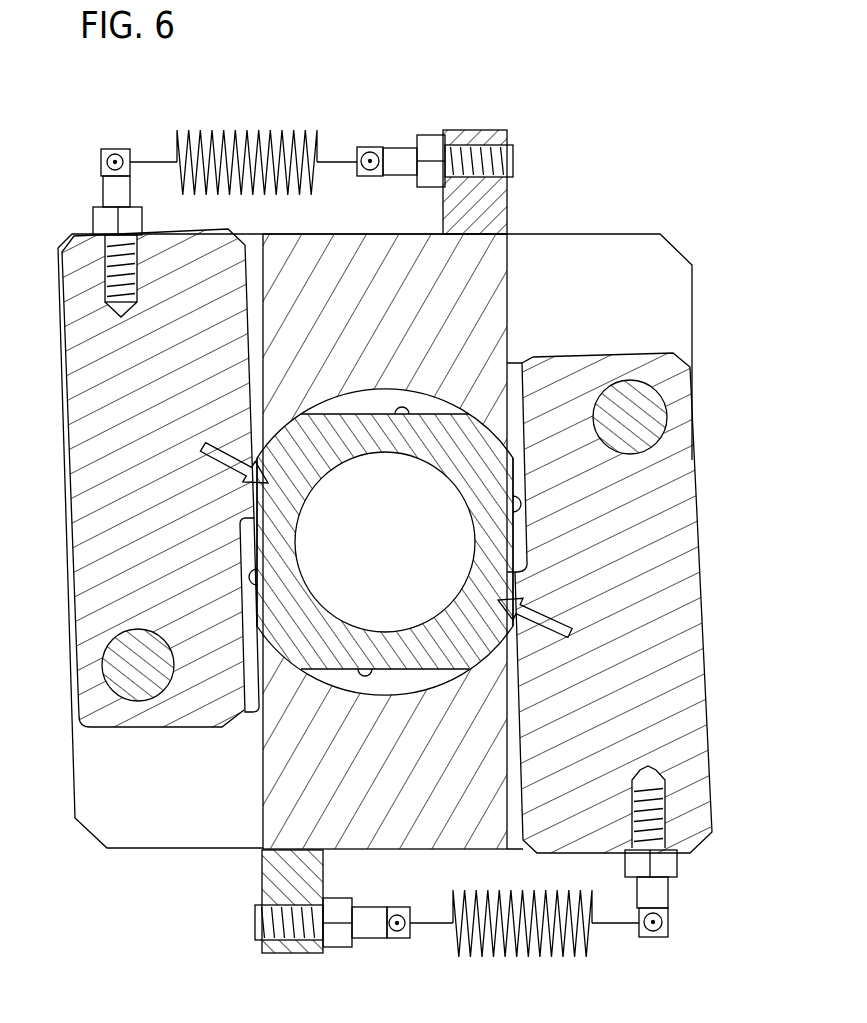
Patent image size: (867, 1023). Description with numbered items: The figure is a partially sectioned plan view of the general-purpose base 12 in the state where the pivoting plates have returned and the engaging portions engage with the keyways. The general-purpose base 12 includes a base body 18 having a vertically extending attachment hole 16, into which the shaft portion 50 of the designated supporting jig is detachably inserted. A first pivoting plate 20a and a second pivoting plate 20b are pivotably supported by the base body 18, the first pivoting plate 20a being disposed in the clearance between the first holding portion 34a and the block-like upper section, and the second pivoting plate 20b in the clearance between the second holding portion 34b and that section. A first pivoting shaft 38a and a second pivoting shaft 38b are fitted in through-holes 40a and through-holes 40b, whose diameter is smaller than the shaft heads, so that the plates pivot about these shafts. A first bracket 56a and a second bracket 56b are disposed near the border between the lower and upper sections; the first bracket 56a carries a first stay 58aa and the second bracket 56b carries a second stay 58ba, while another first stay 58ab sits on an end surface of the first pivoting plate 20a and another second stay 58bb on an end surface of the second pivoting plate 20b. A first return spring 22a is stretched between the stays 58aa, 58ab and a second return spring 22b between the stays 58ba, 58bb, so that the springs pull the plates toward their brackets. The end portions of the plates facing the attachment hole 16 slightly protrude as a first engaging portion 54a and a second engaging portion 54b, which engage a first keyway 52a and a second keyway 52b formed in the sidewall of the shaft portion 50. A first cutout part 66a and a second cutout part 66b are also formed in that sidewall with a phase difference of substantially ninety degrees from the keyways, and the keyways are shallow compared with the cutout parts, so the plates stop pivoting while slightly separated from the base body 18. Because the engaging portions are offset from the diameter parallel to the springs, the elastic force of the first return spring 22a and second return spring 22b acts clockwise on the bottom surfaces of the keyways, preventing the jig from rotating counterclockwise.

The general-purpose base 12 is at (679, 242).
The attachment hole 16 is at (412, 692).
The base body 18 is at (349, 242).
The first pivoting plate 20a is at (697, 548).
The second pivoting plate 20b is at (75, 488).
The first return spring 22a is at (507, 953).
The second return spring 22b is at (197, 140).
The first holding portion 34a is at (517, 368).
The second holding portion 34b is at (253, 717).
The first pivoting shaft 38a is at (637, 436).
The second pivoting shaft 38b is at (123, 674).
The through-holes 40a is at (593, 422).
The through-holes 40b is at (170, 655).
The shaft portion 50 is at (453, 470).
The first keyway 52a is at (508, 506).
The second keyway 52b is at (262, 574).
The first engaging portion 54a is at (510, 565).
The second engaging portion 54b is at (258, 521).
The first bracket 56a is at (283, 880).
The second bracket 56b is at (487, 203).
The first stay 58aa is at (370, 930).
The first stay 58ab is at (670, 917).
The second stay 58ba is at (400, 150).
The second stay 58bb is at (102, 166).
The first cutout part 66a is at (368, 674).
The second cutout part 66b is at (402, 412).